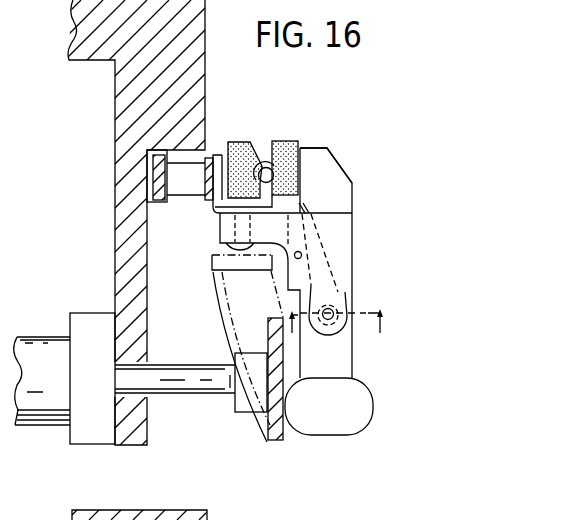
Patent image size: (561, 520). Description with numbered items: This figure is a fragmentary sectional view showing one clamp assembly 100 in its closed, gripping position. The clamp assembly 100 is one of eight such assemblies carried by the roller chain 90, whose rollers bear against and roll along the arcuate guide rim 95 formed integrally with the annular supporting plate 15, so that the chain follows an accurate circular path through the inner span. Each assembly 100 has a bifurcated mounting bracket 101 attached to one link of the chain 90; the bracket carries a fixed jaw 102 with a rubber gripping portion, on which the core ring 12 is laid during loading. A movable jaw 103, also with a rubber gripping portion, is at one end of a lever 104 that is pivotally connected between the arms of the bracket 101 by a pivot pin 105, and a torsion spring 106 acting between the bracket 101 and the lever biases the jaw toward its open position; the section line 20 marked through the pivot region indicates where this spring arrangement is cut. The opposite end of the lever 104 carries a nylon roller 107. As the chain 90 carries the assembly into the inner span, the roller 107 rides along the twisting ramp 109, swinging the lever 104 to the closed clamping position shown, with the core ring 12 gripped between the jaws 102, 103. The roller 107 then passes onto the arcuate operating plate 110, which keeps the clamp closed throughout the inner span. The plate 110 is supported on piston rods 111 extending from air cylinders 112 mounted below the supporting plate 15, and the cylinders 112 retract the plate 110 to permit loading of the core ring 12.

The annular supporting plate 15 is at (115, 120).
The roller chain 90 is at (155, 192).
The arcuate guide rim 95 is at (183, 163).
The clamp assembly 100 is at (325, 263).
The bifurcated mounting bracket 101 is at (352, 225).
The fixed jaw 102 is at (241, 142).
The core ring 12 is at (265, 168).
The movable jaw 103 is at (284, 146).
The lever 104 is at (320, 165).
The pivot pin 105 is at (333, 312).
The lever arm 106 is at (335, 276).
The roller 107 is at (372, 406).
The ramp 109 is at (212, 260).
The arcuate operating plate 110 is at (277, 442).
The piston rods 111 is at (190, 390).
The air cylinders 112 is at (43, 413).
The section line 20- 20 is at (346, 342).